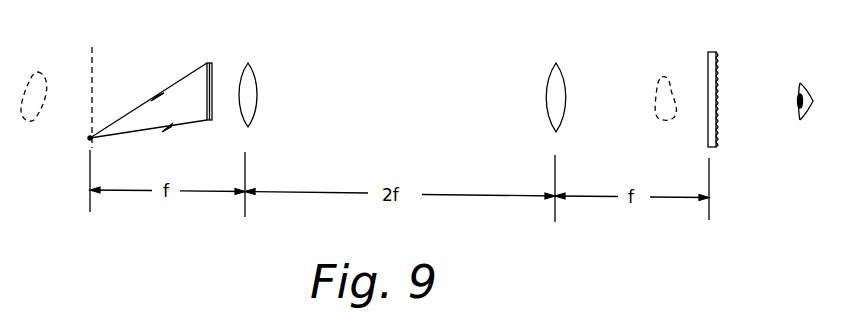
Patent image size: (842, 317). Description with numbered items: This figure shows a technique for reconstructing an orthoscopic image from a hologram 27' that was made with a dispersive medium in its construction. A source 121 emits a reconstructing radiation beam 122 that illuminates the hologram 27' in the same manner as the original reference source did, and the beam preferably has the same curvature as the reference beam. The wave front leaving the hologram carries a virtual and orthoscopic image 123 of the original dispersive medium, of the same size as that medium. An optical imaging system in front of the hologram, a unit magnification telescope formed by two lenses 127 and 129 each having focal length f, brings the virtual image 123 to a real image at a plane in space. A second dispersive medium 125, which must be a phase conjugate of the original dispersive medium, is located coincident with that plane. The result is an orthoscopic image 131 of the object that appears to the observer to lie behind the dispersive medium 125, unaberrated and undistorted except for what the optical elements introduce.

The source 121 is at (89, 139).
The reconstructing radiation beam 122 is at (186, 84).
The virtual and orthoscopic image 123 is at (93, 47).
The hologram 27' is at (229, 74).
The lens 127 is at (252, 80).
The lens 129 is at (553, 80).
The orthoscopic image 131 is at (662, 77).
The second dispersive medium 125 is at (714, 50).